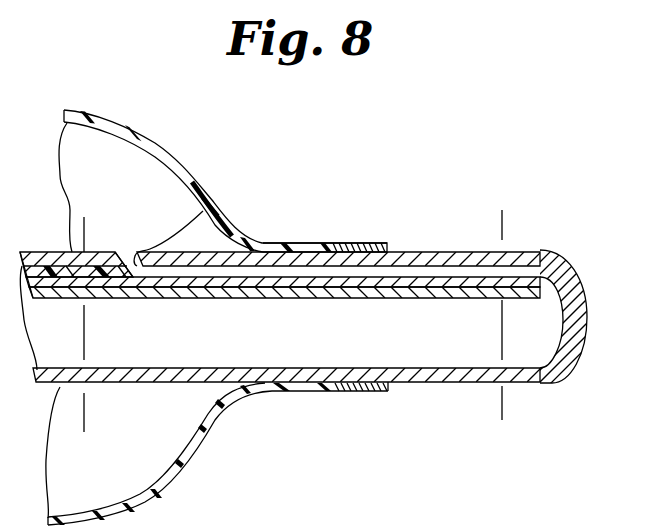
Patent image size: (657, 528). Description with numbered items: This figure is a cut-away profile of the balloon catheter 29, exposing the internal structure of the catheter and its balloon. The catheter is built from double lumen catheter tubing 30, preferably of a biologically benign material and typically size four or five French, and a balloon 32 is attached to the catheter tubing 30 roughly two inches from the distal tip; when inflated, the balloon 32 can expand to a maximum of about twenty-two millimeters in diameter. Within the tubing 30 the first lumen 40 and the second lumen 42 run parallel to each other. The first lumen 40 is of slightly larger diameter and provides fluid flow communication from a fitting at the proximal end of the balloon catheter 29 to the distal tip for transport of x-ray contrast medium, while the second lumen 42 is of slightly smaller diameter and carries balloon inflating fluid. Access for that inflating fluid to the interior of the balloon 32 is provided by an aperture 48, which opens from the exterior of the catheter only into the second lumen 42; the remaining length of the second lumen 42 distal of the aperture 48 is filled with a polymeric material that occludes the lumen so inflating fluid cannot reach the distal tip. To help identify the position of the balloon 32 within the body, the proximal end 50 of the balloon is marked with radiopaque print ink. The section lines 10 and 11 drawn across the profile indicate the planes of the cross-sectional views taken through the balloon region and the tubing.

The section line 10- 10 is at (512, 220).
The section line 11- 11 is at (96, 228).
The balloon catheter 29 is at (436, 188).
The catheter tubing 30 is at (415, 252).
The balloon 32 is at (113, 112).
The first lumen 40 is at (541, 345).
The second lumen 42 is at (547, 254).
The aperture 48 is at (203, 212).
The proximal end of the balloon 50 is at (350, 243).